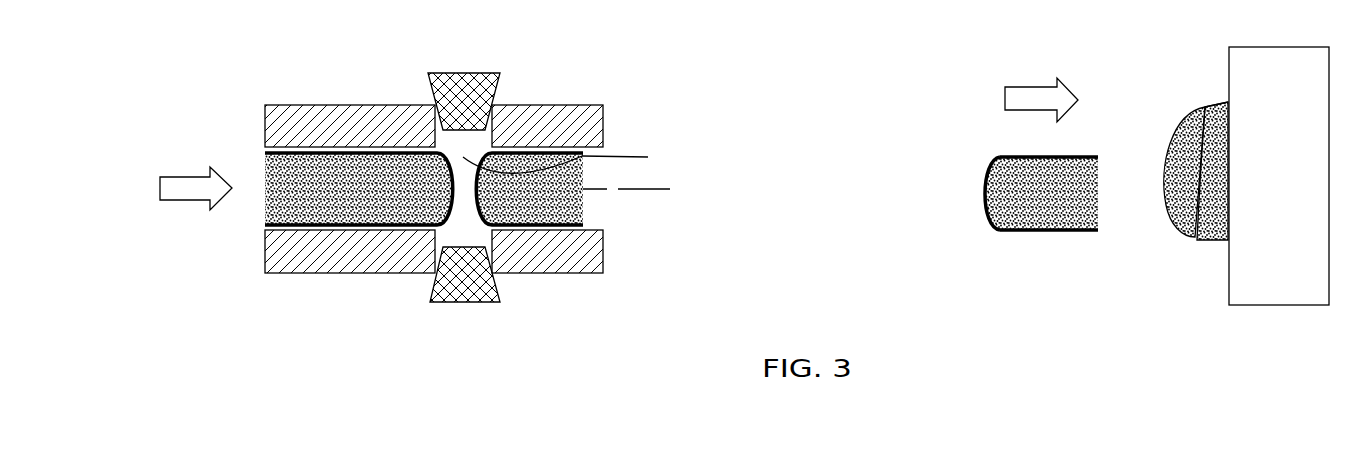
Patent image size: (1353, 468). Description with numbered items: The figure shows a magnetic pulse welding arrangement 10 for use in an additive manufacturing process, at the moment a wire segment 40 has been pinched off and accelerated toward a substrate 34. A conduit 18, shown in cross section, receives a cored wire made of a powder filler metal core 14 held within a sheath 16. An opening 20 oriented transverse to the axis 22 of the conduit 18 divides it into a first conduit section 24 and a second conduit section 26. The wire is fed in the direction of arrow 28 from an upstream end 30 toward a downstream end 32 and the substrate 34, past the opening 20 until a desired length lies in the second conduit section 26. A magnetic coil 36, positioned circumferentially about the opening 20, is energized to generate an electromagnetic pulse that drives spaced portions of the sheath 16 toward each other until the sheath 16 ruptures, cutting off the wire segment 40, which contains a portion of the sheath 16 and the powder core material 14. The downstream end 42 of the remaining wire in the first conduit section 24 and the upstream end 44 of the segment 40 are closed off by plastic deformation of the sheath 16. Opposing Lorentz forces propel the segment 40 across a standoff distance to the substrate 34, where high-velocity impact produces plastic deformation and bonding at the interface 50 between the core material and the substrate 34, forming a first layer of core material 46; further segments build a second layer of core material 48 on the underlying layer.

The magnetic pulse welding arrangement 10 is at (647, 98).
The powder filler metal core 14 is at (277, 205).
The sheath 16 is at (315, 152).
The conduit 18 is at (567, 115).
The opening 20 is at (573, 160).
The axis 22 is at (665, 191).
The first conduit section 24 is at (358, 267).
The second conduit section 26 is at (532, 262).
The arrow 28 is at (185, 190).
The upstream end 30 is at (200, 123).
The downstream end 32 is at (805, 165).
The substrate 34 is at (1229, 70).
The magnetic coil 36 is at (462, 90).
The wire segment 40 is at (588, 273).
The downstream end of the remaining wire 42 is at (453, 213).
The upstream end of the segment 44 is at (478, 212).
The first layer of core material 46 is at (1217, 240).
The second layer of core material 48 is at (1180, 232).
The interface 50 is at (1227, 103).